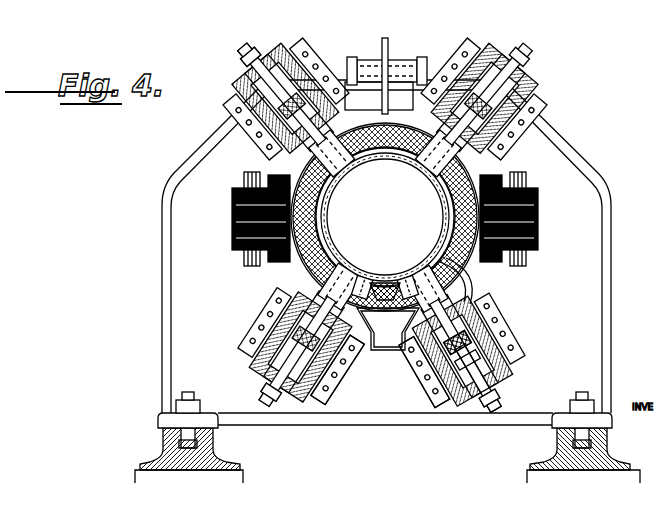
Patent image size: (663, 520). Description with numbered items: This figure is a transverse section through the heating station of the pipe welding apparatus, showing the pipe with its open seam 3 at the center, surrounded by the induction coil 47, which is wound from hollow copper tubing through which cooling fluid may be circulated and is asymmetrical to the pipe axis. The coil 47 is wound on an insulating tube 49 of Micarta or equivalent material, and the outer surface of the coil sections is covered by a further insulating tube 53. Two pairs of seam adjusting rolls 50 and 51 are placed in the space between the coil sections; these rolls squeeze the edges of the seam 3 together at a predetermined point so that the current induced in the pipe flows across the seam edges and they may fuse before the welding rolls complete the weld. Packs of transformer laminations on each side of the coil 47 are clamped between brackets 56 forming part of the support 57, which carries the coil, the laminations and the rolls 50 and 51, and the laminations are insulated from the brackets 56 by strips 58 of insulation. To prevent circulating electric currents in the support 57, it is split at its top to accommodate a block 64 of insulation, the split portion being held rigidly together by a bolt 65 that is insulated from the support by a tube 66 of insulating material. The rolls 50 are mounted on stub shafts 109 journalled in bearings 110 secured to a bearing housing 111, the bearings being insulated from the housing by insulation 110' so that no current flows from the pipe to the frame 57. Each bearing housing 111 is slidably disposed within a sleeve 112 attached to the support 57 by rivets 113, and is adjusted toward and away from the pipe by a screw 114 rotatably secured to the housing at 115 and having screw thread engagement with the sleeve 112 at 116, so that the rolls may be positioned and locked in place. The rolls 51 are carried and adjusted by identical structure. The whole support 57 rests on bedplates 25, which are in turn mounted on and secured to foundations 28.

The open seam 3 is at (385, 284).
The bedplates 25 is at (220, 462).
The foundations 28 is at (246, 472).
The induction coil 47 is at (300, 268).
The insulating tube 49 is at (305, 282).
The seam adjusting rolls 50 is at (340, 295).
The seam adjusting rolls 51 is at (328, 158).
The insulating tube 53 is at (273, 167).
The brackets 56 is at (256, 176).
The support 57 is at (608, 248).
The insulation strips 58 is at (232, 192).
The insulation block 64 is at (385, 40).
The bolt 65 is at (360, 66).
The insulating tube 66 is at (400, 60).
The stub shafts 109 is at (470, 274).
The bearings 110 is at (393, 308).
The insulation 110' is at (473, 354).
The bearing housing 111 is at (436, 388).
The sleeves 112 is at (487, 362).
The rivets 113 is at (412, 372).
The screws 114 is at (487, 374).
The rotatable securing point 115 is at (478, 350).
The screw thread engagement 116 is at (470, 392).